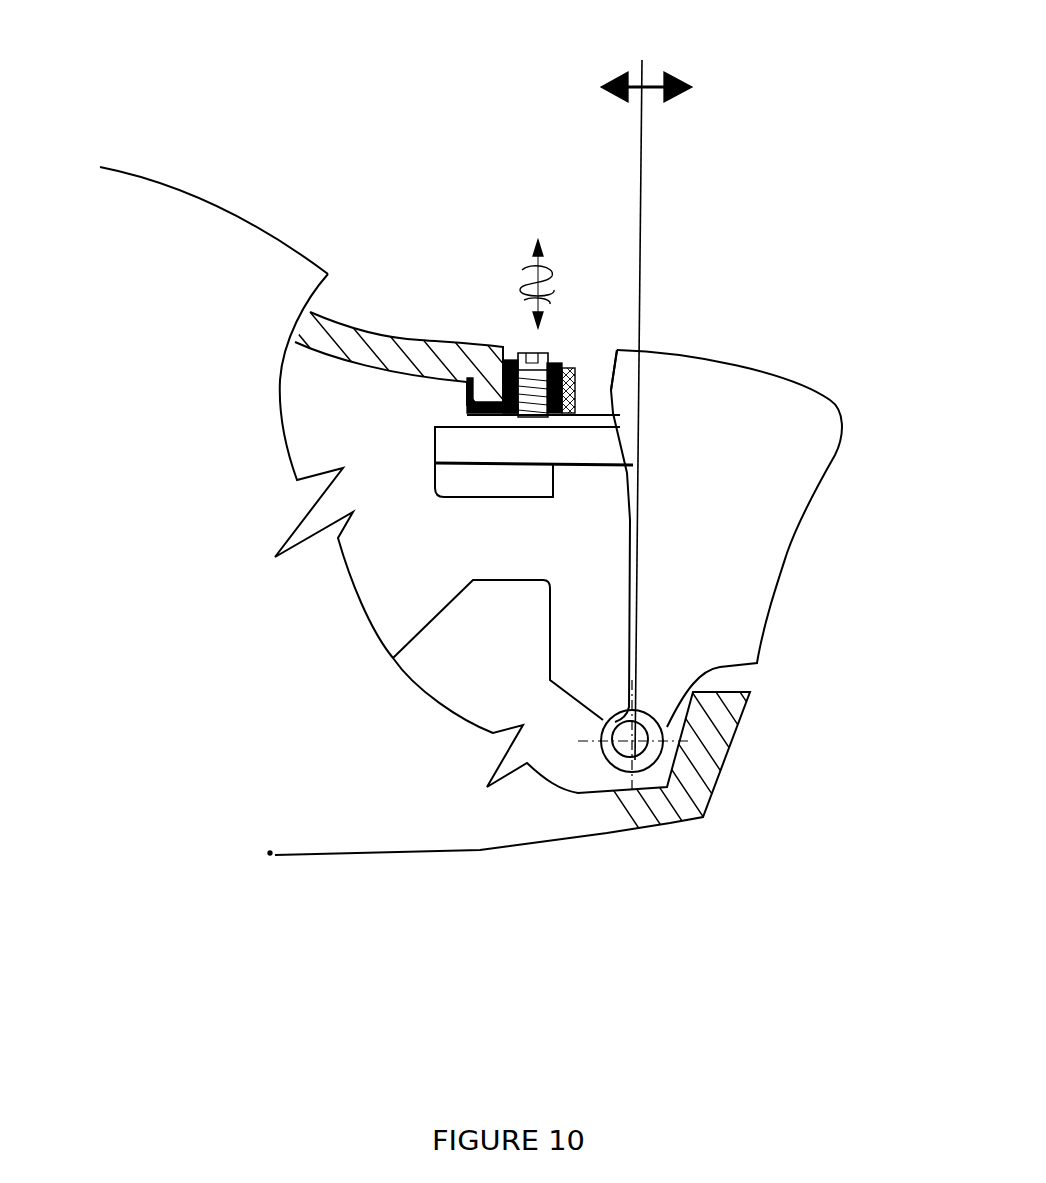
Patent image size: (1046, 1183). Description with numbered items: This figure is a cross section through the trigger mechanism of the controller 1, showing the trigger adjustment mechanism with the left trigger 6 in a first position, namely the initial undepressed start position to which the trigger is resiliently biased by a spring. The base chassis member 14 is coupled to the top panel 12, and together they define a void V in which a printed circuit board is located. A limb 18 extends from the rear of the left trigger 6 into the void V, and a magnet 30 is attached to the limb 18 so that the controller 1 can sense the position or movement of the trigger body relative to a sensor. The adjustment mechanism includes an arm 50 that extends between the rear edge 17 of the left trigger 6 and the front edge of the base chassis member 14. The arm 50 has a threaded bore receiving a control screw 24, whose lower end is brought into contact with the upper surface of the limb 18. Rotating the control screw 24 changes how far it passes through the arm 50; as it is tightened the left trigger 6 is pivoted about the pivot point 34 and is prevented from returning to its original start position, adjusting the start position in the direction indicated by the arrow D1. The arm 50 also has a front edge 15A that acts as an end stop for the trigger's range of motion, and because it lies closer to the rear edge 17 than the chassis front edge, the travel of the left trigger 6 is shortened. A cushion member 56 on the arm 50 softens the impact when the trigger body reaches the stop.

The controller 1 is at (313, 215).
The left trigger 6 is at (750, 410).
The top panel 12 is at (335, 823).
The base chassis member 14 is at (338, 345).
The front edge of the arm 15A is at (578, 398).
The rear edge of the left trigger body 17 is at (615, 377).
The limb 18 is at (470, 435).
The control screw 24 is at (527, 368).
The magnet 30 is at (517, 472).
The pivot point 34 is at (643, 750).
The arm 50 is at (500, 387).
The cushion member 56 is at (570, 390).
The void V is at (388, 578).
The direction arrow D1 is at (646, 386).